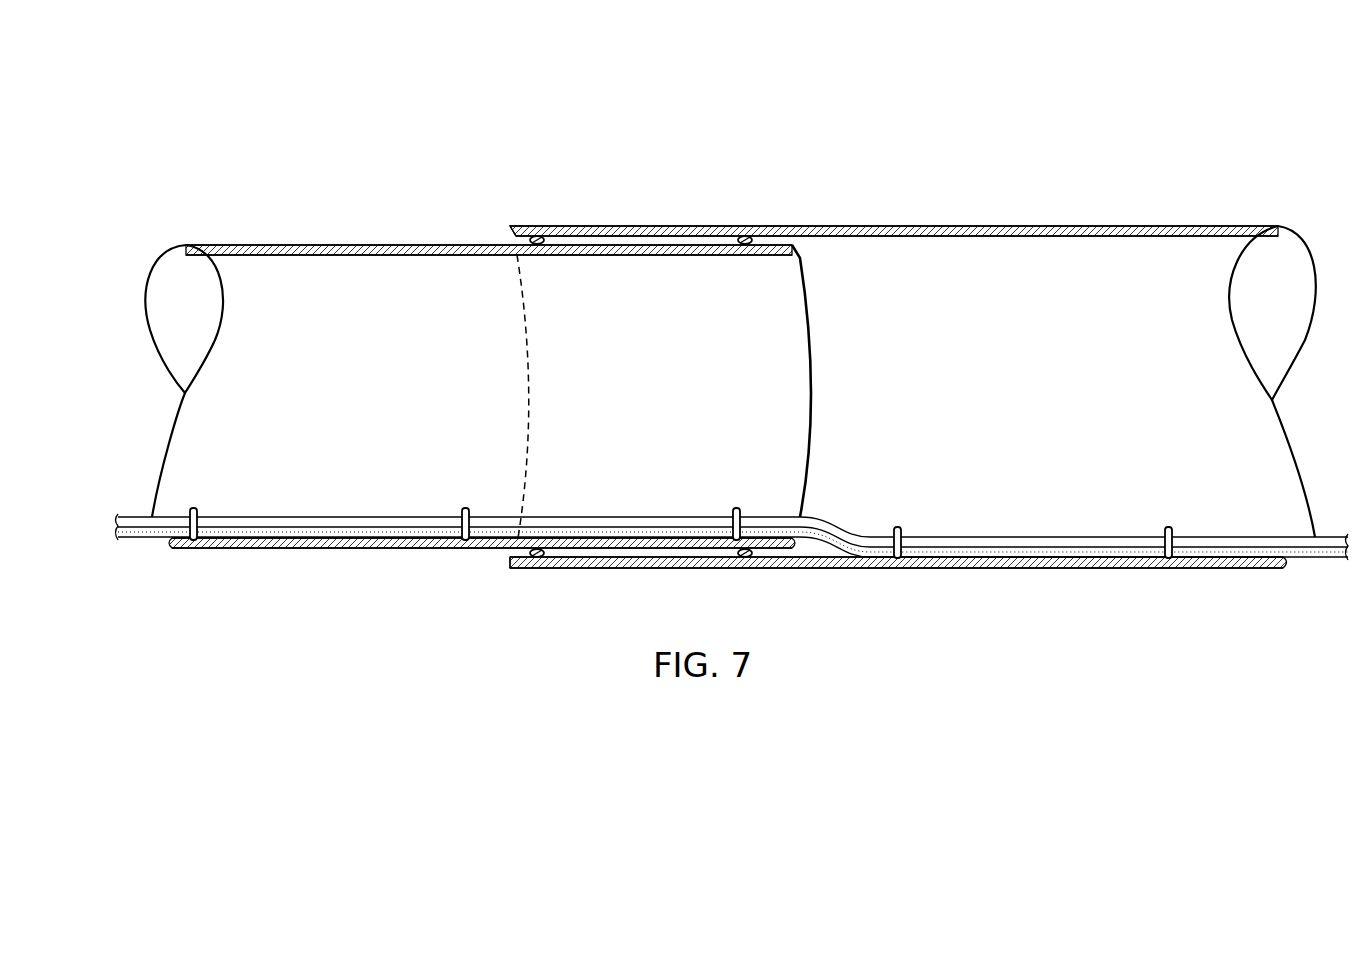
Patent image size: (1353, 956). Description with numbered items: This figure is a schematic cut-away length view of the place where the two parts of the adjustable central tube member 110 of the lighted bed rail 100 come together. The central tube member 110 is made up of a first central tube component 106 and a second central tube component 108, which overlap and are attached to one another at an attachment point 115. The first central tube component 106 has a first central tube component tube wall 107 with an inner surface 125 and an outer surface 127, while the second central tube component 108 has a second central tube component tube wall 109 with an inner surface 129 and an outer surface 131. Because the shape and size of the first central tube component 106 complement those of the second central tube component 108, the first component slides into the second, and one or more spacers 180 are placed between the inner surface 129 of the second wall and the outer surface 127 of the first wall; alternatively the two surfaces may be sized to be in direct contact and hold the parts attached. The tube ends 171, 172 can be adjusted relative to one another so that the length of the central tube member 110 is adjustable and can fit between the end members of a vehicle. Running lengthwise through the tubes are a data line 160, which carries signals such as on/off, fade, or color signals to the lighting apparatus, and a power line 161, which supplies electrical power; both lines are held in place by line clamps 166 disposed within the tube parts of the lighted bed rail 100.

The lighted bed rail 100 is at (1174, 160).
The first central tube component 106 is at (150, 205).
The first central tube component tube wall 107 is at (300, 245).
The second central tube component 108 is at (1250, 205).
The second central tube component tube wall 109 is at (1106, 226).
The central tube member 110 is at (632, 195).
The attachment point 115 is at (622, 582).
The inner surface 125 is at (411, 257).
The outer surface 127 is at (430, 245).
The inner surface 129 is at (1011, 237).
The outer surface 131 is at (927, 226).
The data line 160 is at (307, 527).
The power line 161 is at (359, 517).
The line clamp 166 is at (197, 507).
The tube end 171 is at (528, 345).
The tube end 172 is at (812, 351).
The spacer 180 is at (537, 237).